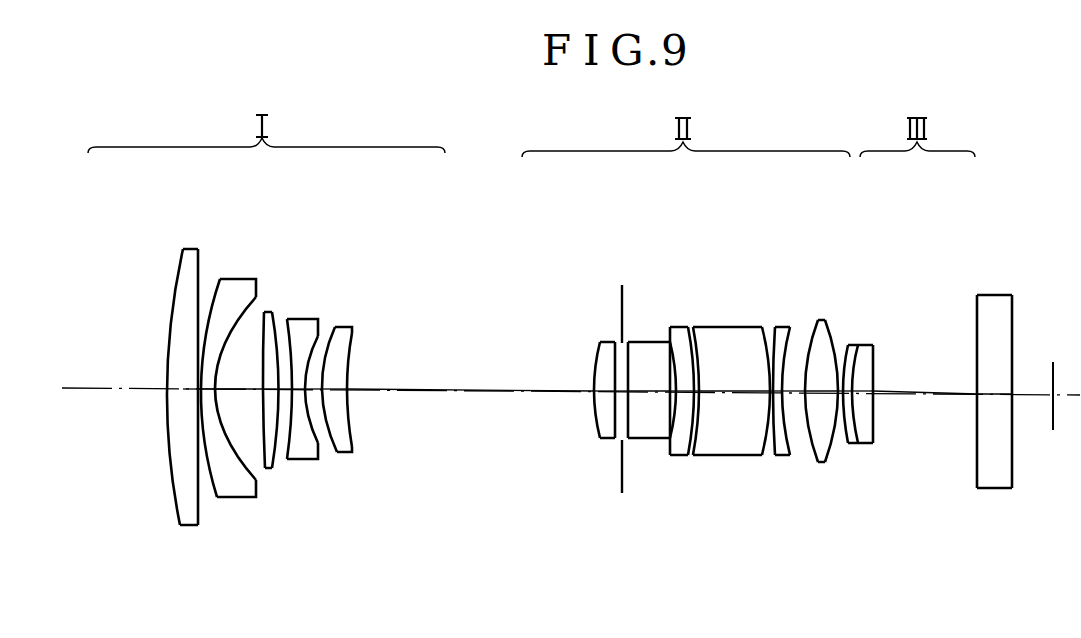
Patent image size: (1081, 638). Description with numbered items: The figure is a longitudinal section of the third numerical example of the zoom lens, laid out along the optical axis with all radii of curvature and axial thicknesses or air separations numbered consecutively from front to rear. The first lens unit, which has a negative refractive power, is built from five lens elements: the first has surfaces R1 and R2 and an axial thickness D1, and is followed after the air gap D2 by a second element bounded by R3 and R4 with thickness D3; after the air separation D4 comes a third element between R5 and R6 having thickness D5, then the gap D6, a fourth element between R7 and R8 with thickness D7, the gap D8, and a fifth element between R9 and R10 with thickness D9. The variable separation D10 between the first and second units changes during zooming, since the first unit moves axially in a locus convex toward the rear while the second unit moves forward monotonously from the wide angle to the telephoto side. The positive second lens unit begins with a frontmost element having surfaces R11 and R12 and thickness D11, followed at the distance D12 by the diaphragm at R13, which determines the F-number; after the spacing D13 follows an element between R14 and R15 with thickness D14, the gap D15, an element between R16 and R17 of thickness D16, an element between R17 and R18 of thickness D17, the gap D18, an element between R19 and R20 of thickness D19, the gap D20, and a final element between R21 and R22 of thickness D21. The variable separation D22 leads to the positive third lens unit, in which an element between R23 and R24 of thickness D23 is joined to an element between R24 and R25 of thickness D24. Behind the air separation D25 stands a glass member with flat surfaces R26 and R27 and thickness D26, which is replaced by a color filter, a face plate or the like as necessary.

The radius of curvature of the first lens surface R1 is at (176, 386).
The radius of curvature of the second lens surface R2 is at (196, 386).
The radius of curvature of the third lens surface R3 is at (207, 386).
The radius of curvature of the fourth lens surface R4 is at (222, 386).
The radius of curvature of the fifth lens surface R5 is at (266, 386).
The radius of curvature of the sixth lens surface R6 is at (276, 386).
The radius of curvature of the seventh lens surface R7 is at (293, 386).
The radius of curvature of the eighth lens surface R8 is at (305, 386).
The radius of curvature of the ninth lens surface R9 is at (326, 386).
The radius of curvature of the tenth lens surface R10 is at (346, 386).
The radius of curvature of the eleventh lens surface R11 is at (596, 386).
The radius of curvature of the twelfth lens surface R12 is at (613, 386).
The stop R13 is at (629, 386).
The radius of curvature of the fourteenth lens surface R14 is at (667, 386).
The radius of curvature of the fifteenth lens surface R15 is at (675, 386).
The radius of curvature of the sixteenth lens surface R16 is at (692, 386).
The radius of curvature of the seventeenth lens surface R17 is at (698, 386).
The radius of curvature of the eighteenth lens surface R18 is at (768, 386).
The radius of curvature of the nineteenth lens surface R19 is at (774, 386).
The radius of curvature of the twentieth lens surface R20 is at (784, 386).
The radius of curvature of the twenty-first lens surface R21 is at (808, 386).
The radius of curvature of the twenty-second lens surface R22 is at (836, 386).
The radius of curvature of the twenty-third lens surface R23 is at (845, 386).
The radius of curvature of the twenty-fourth lens surface R24 is at (855, 386).
The radius of curvature of the twenty-fifth lens surface R25 is at (874, 386).
The radius of curvature of the twenty-sixth surface R26 is at (977, 330).
The radius of curvature of the twenty-seventh surface R27 is at (1014, 332).
The axial thickness of the first lens element D1 is at (186, 392).
The air separation between the first and second lens elements D2 is at (200, 392).
The axial thickness of the second lens element D3 is at (226, 392).
The air separation between the second and third lens elements D4 is at (242, 392).
The axial thickness of the third lens element D5 is at (270, 392).
The air separation between the third and fourth lens elements D6 is at (283, 392).
The axial thickness of the fourth lens element D7 is at (299, 392).
The air separation between the fourth and fifth lens elements D8 is at (314, 392).
The axial thickness of the fifth lens element D9 is at (336, 392).
The variable air separation between the first and second lens units D10 is at (455, 396).
The axial thickness of the sixth lens element D11 is at (603, 393).
The air separation between the sixth lens element and the stop D12 is at (622, 393).
The air separation between the stop and the seventh lens element D13 is at (645, 393).
The axial thickness of the seventh lens element D14 is at (672, 393).
The air separation between the seventh and eighth lens elements D15 is at (684, 393).
The axial thickness of the eighth lens element D16 is at (693, 393).
The axial thickness of the ninth lens element D17 is at (718, 393).
The air separation between the ninth and tenth lens elements D18 is at (770, 393).
The axial thickness of the tenth lens element D19 is at (779, 393).
The air separation between the tenth and eleventh lens elements D20 is at (796, 393).
The axial thickness of the eleventh lens element D21 is at (818, 393).
The variable air separation between the second and third lens units D22 is at (839, 393).
The axial thickness of the twelfth lens element D23 is at (852, 393).
The axial thickness of the thirteenth lens element D24 is at (870, 393).
The air separation between the third lens unit and the glass member D25 is at (927, 396).
The axial thickness of the glass member D26 is at (995, 396).